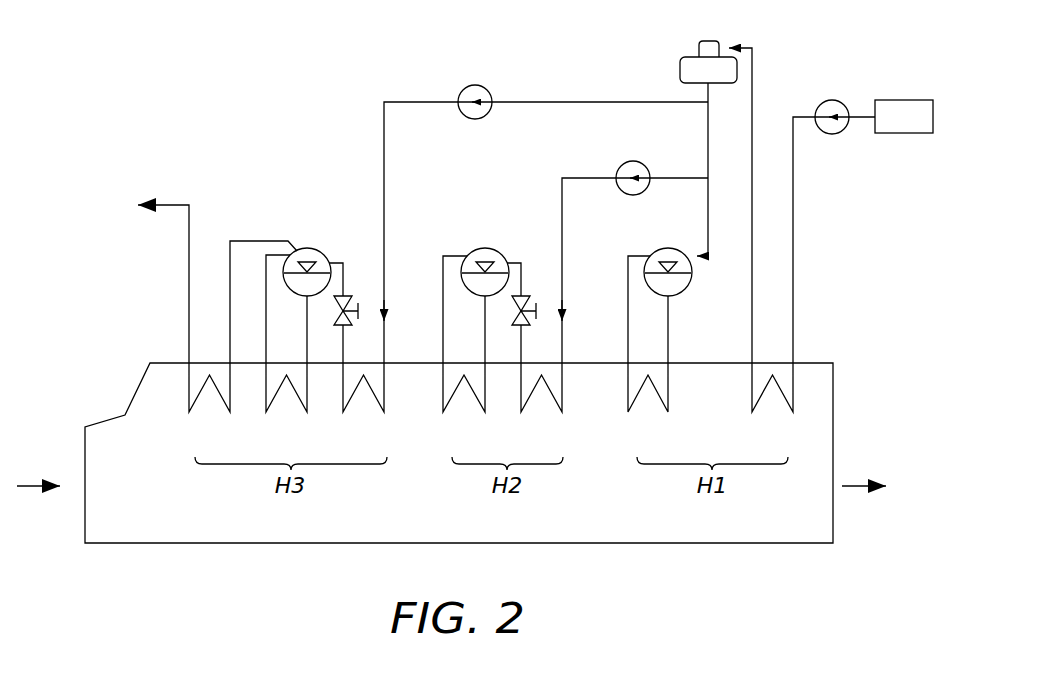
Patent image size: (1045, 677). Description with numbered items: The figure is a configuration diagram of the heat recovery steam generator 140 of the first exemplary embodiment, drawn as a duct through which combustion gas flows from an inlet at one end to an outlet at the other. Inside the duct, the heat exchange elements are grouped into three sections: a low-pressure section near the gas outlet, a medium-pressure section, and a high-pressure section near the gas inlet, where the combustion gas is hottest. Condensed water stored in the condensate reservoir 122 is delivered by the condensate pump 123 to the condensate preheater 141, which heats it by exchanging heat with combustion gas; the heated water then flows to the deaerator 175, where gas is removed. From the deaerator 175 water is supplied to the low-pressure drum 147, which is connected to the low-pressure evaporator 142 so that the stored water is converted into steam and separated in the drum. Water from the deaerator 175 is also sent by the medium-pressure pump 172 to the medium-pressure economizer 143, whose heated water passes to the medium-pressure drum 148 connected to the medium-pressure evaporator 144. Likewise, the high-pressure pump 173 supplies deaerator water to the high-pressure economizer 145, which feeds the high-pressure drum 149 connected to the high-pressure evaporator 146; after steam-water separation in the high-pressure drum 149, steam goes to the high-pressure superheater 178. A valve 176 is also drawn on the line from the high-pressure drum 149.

The condensate reservoir 122 is at (905, 100).
The condensate pump 123 is at (832, 100).
The heat recovery steam generator 140 is at (166, 352).
The condensate preheater 141 is at (789, 409).
The low-pressure evaporator 142 is at (664, 409).
The medium-pressure economizer 143 is at (558, 409).
The medium-pressure evaporator 144 is at (481, 409).
The high-pressure economizer 145 is at (380, 409).
The high-pressure evaporator 146 is at (303, 409).
The low-pressure drum 147 is at (668, 248).
The medium-pressure drum 148 is at (485, 248).
The high-pressure drum 149 is at (307, 248).
The medium-pressure pump 172 is at (633, 161).
The high-pressure pump 173 is at (475, 85).
The deaerator 175 is at (685, 57).
The valve 176 is at (346, 294).
The high-pressure superheater 178 is at (226, 409).